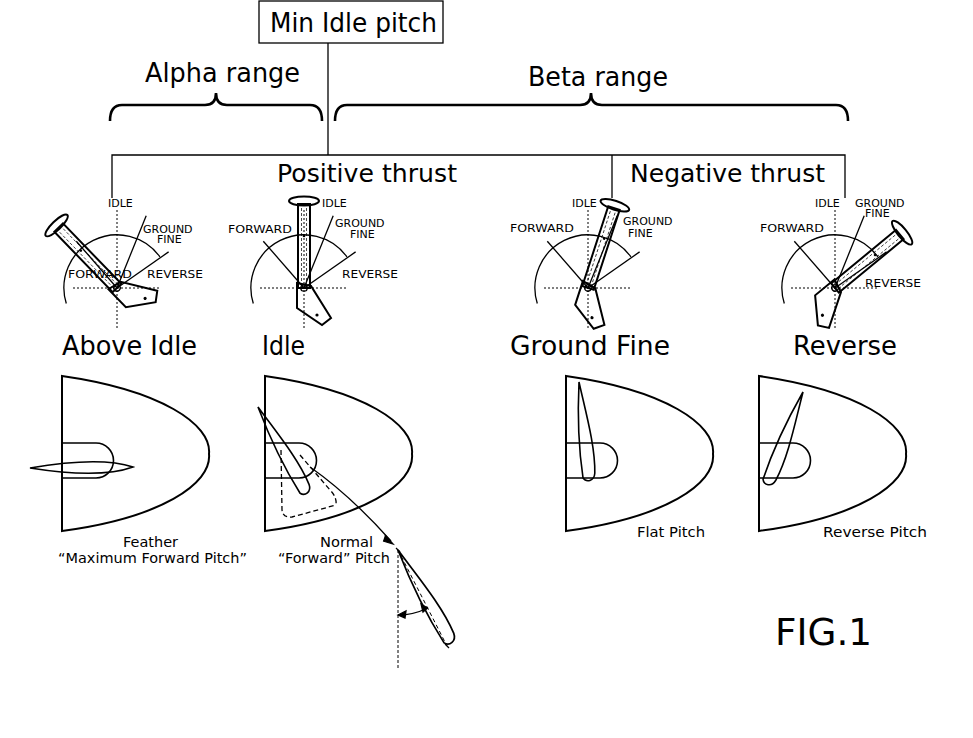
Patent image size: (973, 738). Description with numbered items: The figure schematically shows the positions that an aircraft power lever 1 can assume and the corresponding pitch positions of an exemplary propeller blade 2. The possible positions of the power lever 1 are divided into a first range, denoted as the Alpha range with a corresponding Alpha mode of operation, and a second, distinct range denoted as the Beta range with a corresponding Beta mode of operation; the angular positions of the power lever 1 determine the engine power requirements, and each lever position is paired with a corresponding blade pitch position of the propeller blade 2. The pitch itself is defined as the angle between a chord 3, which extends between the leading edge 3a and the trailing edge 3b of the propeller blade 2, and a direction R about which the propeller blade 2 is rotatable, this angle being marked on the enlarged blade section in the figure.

The aircraft power lever 1 is at (77, 230).
The propeller blade 2 is at (70, 461).
The chord 3 is at (448, 648).
The leading edge 3a is at (399, 552).
The trailing edge 3b is at (447, 648).
The direction about which the propeller blade is rotatable R is at (397, 638).